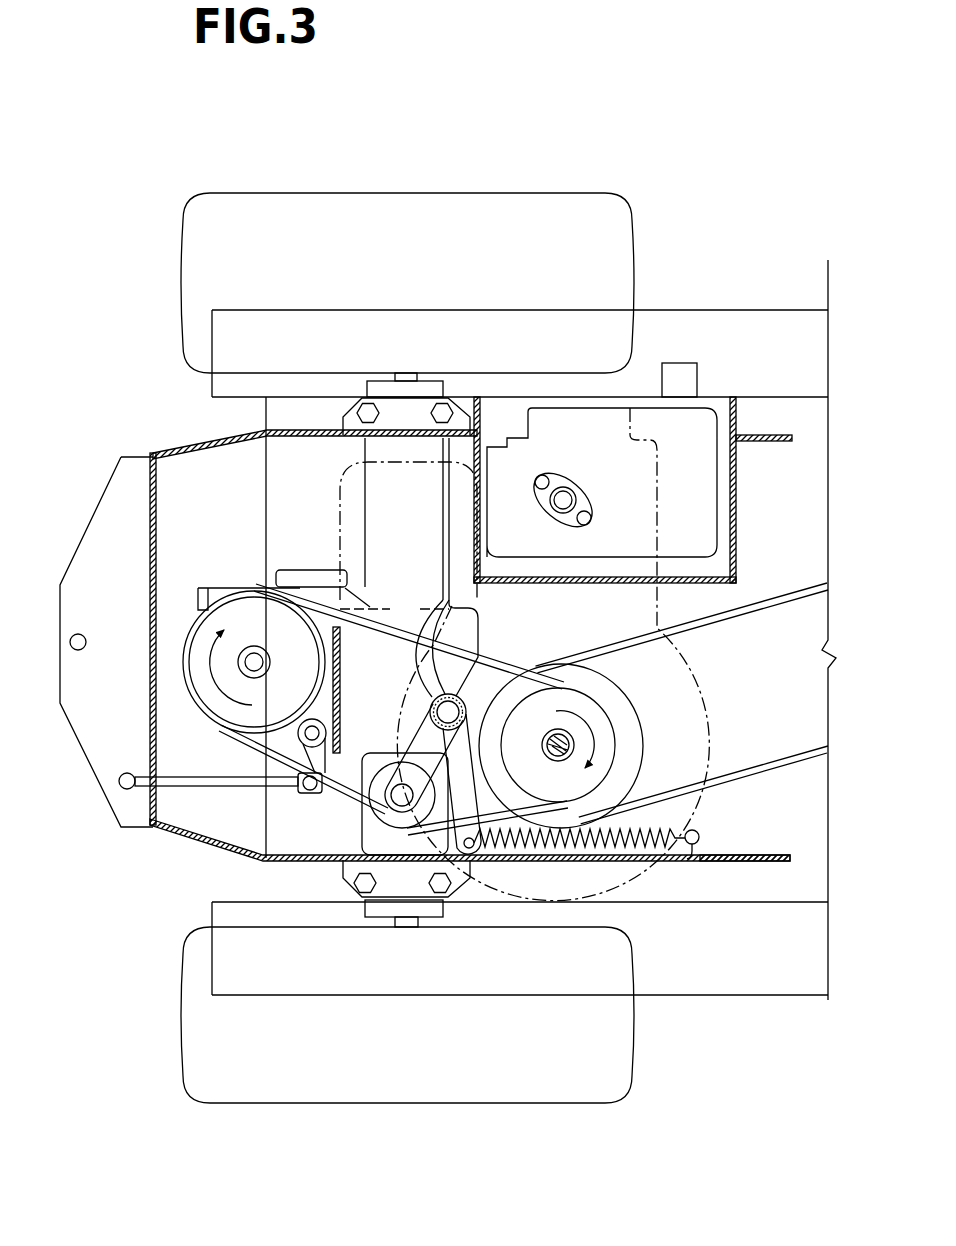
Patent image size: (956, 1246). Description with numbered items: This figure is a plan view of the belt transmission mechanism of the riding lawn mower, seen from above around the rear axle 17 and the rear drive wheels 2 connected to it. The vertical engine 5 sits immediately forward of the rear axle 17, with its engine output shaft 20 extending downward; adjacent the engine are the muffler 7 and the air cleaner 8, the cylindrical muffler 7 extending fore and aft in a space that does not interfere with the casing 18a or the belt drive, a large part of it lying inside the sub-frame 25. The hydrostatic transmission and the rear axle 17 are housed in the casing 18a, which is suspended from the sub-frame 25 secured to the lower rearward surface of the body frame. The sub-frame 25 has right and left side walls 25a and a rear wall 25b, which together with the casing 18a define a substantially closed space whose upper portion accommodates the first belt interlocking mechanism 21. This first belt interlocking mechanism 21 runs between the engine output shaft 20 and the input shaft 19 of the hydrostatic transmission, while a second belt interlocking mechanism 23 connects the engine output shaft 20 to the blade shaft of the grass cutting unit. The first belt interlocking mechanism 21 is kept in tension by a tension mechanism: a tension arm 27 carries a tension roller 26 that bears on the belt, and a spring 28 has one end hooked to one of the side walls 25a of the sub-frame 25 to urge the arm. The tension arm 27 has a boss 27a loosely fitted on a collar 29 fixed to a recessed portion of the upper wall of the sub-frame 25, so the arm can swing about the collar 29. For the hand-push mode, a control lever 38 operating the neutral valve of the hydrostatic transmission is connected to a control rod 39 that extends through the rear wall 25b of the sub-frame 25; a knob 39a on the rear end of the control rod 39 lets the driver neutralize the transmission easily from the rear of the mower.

The rear drive wheels 2 is at (188, 245).
The vertical engine 5 is at (708, 726).
The muffler 7 is at (712, 480).
The air cleaner 8 is at (338, 540).
The rear axle 17 is at (406, 373).
The casing 18a is at (211, 588).
The input shaft 19 is at (253, 648).
The engine output shaft 20 is at (554, 726).
The first belt interlocking mechanism 21 is at (252, 757).
The second belt interlocking mechanism 23 is at (795, 592).
The sub-frame 25 is at (203, 850).
The side walls 25a is at (784, 437).
The rear wall 25b is at (150, 487).
The tension roller 26 is at (378, 777).
The tension arm 27 is at (398, 770).
The boss 27a is at (462, 668).
The spring 28 is at (700, 831).
The collar 29 is at (464, 704).
The control lever 38 is at (305, 726).
The control rod 39 is at (188, 777).
The knob 39a is at (125, 773).